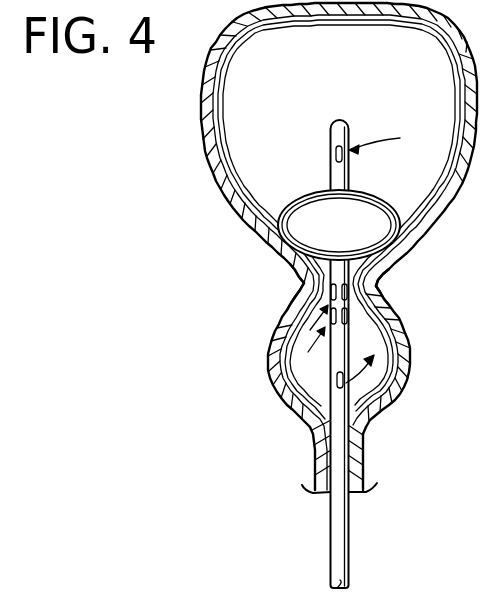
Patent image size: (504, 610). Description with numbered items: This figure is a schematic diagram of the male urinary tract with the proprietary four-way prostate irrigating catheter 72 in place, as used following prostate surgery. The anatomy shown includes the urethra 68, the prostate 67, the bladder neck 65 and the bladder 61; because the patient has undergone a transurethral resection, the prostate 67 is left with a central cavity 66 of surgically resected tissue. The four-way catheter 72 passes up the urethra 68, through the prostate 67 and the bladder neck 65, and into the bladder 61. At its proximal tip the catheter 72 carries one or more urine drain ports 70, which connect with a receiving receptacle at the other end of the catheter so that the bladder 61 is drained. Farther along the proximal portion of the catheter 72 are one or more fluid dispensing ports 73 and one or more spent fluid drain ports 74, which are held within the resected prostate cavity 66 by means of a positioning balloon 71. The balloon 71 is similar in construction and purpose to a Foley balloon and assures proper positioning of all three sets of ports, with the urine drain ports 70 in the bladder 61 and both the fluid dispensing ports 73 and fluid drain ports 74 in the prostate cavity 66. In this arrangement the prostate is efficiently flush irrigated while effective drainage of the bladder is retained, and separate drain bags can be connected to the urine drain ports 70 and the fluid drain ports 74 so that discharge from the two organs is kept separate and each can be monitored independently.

The bladder 61 is at (201, 138).
The bladder neck 65 is at (300, 288).
The central cavity 66 is at (300, 357).
The prostate 67 is at (283, 397).
The urethra 68 is at (313, 467).
The urine drain ports 70 is at (333, 159).
The positioning balloon 71 is at (303, 222).
The four-way catheter 72 is at (337, 533).
The fluid dispensing ports 73 is at (345, 381).
The spent fluid drain ports 74 is at (350, 293).